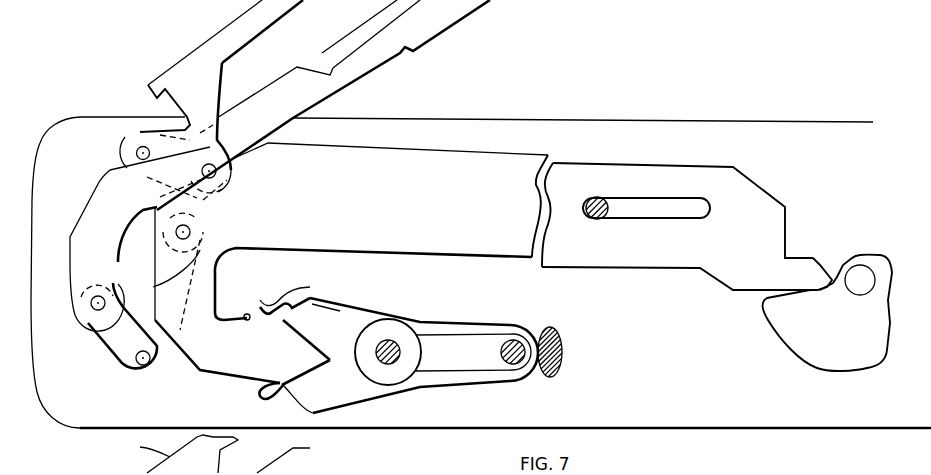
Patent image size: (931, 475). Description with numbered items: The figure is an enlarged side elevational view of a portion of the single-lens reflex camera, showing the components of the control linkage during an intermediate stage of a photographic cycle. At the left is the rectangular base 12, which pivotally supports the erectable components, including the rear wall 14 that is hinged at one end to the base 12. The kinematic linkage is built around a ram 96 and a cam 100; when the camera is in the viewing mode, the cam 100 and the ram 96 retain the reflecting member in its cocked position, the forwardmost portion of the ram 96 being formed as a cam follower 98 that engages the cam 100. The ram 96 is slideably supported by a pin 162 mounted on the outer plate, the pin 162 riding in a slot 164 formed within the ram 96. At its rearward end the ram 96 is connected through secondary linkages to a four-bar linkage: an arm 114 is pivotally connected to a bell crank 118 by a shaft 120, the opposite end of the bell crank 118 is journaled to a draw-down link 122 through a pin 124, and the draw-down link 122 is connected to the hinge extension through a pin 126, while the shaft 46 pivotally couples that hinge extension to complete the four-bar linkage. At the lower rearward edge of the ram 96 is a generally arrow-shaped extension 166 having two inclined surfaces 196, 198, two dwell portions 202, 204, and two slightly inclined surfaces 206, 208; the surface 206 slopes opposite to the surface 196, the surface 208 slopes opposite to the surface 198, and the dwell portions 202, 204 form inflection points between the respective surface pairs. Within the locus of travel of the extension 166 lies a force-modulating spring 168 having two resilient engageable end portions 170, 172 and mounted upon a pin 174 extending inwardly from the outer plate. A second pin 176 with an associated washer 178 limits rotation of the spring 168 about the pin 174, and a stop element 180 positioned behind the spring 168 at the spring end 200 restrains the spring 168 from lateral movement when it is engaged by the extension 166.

The base 12 is at (33, 170).
The rear wall 14 is at (213, 33).
The shaft 46 is at (143, 152).
The ram 96 is at (402, 205).
The cam follower 98 is at (827, 259).
The cam 100 is at (852, 349).
The arm 114 is at (203, 247).
The bell crank 118 is at (110, 355).
The shaft 120 is at (143, 368).
The draw-down link 122 is at (103, 209).
The pin 124 is at (90, 319).
The pin 126 is at (230, 183).
The pin 162 is at (600, 199).
The slot 164 is at (697, 212).
The arrow-shaped extension 166 is at (208, 358).
The force-modulating spring 168 is at (409, 391).
The spring end portion 170 is at (343, 298).
The spring end portion 172 is at (330, 403).
The pin 174 is at (513, 339).
The second pin 176 is at (400, 352).
The washer 178 is at (402, 333).
The stop element 180 is at (561, 360).
The inclined surface 196 is at (300, 320).
The inclined surface 198 is at (306, 372).
The spring end 200 is at (532, 367).
The dwell portion 202 is at (307, 318).
The dwell portion 204 is at (282, 385).
The slightly inclined surface 206 is at (247, 320).
The slightly inclined surface 208 is at (252, 380).